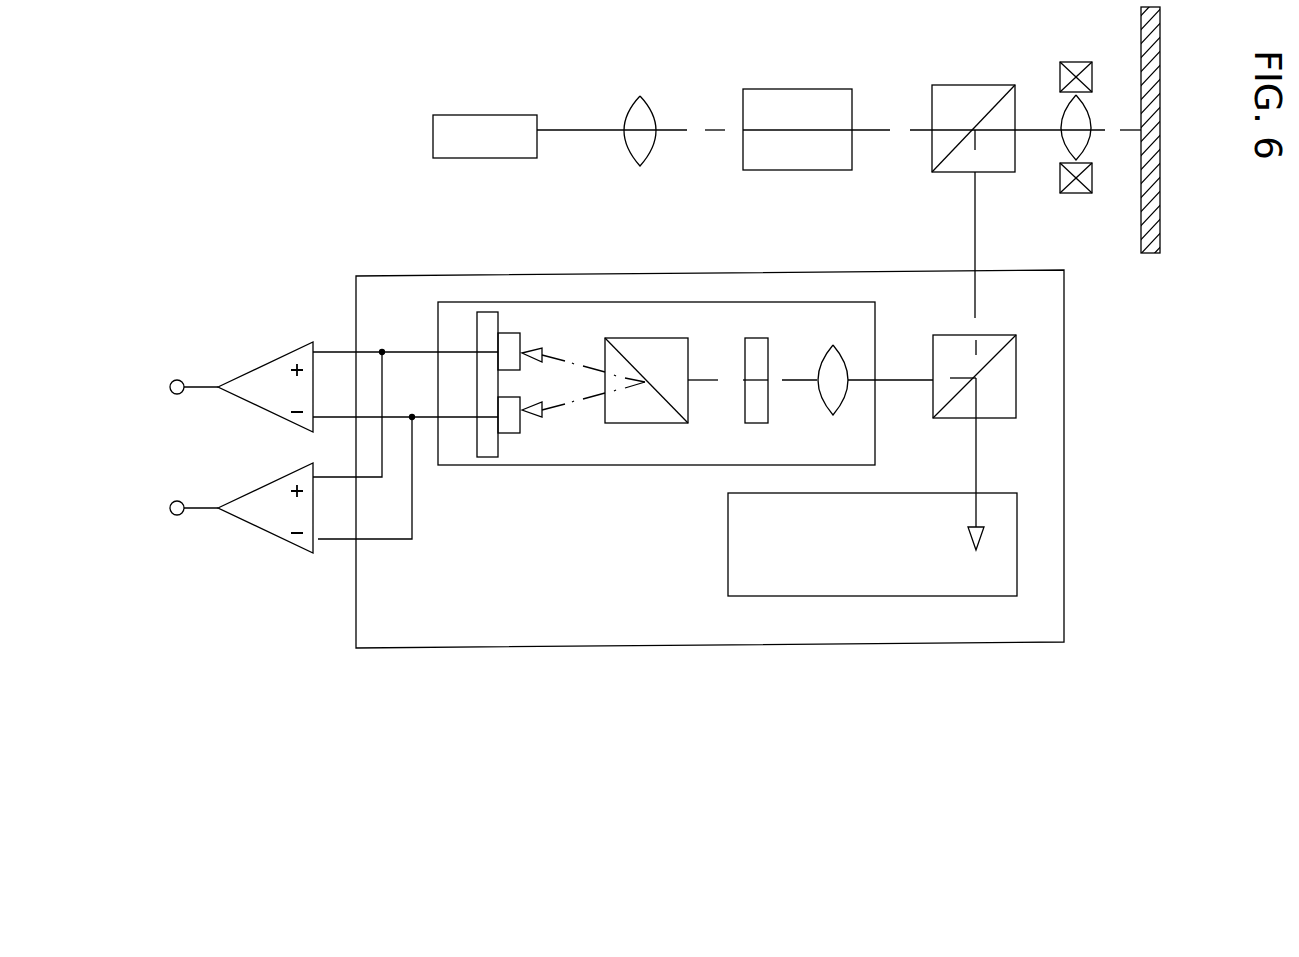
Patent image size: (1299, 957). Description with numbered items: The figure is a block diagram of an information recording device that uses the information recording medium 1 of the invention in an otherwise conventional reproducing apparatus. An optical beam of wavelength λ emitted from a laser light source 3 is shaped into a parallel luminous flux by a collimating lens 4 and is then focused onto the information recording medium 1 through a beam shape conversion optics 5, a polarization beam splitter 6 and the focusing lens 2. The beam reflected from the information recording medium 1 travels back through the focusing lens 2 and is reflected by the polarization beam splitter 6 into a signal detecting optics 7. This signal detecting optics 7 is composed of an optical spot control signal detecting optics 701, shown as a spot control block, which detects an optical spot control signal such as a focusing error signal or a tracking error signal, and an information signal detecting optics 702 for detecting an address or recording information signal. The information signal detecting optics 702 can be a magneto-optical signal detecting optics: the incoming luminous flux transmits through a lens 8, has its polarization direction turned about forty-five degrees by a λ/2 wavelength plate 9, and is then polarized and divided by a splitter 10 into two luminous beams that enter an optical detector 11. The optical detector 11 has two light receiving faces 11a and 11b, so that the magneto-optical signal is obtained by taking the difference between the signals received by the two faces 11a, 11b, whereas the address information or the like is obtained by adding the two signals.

The information recording medium 1 is at (1160, 253).
The focusing lens 2 is at (1086, 62).
The laser light source 3 is at (498, 120).
The collimating lens 4 is at (646, 118).
The beam shape conversion optics 5 is at (798, 108).
The polarization beam splitter 6 is at (972, 85).
The signal detecting optics 7 is at (1066, 602).
The lens 8 is at (840, 362).
The λ/2 wavelength plate 9 is at (760, 338).
The splitter 10 is at (660, 338).
The optical detector 11 is at (496, 312).
The light receiving face 11a is at (520, 340).
The light receiving face 11b is at (522, 425).
The optical spot control signal detecting optics 701 is at (728, 568).
The information signal detecting optics 702 is at (533, 466).